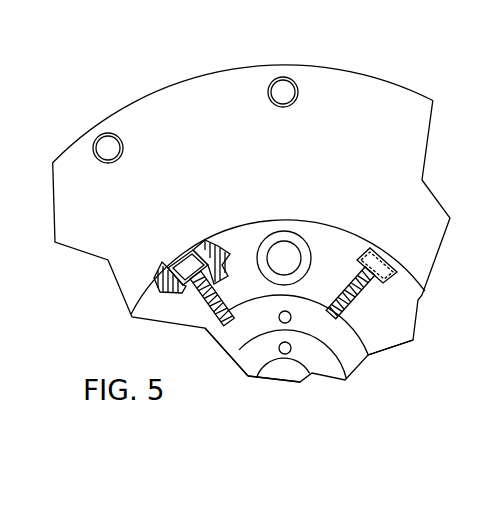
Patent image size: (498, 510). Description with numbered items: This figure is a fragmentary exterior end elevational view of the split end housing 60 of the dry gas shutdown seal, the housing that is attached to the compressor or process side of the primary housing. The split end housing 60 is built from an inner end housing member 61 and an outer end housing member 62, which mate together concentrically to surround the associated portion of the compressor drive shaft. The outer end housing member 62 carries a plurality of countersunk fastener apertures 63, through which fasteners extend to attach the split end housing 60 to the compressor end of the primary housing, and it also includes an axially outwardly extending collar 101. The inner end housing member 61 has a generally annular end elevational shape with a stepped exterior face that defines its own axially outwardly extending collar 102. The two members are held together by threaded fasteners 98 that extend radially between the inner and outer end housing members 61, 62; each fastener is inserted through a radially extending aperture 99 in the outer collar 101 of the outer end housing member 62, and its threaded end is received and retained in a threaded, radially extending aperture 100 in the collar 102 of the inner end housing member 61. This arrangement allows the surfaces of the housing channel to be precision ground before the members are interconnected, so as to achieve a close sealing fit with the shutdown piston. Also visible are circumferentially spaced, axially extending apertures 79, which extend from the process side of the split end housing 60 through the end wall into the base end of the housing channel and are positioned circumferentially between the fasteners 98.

The split end housing 60 is at (427, 76).
The inner end housing member 61 is at (243, 384).
The outer end housing member 62 is at (97, 115).
The countersunk fastener apertures 63 is at (283, 85).
The axially extending apertures 79 is at (287, 236).
The fasteners 98 is at (182, 252).
The radially extending apertures 99 is at (226, 291).
The threaded radially extending apertures 100 is at (219, 343).
The collar 101 is at (153, 302).
The collar 102 is at (353, 362).